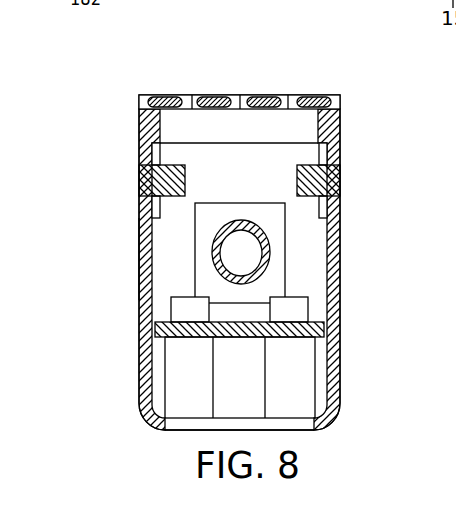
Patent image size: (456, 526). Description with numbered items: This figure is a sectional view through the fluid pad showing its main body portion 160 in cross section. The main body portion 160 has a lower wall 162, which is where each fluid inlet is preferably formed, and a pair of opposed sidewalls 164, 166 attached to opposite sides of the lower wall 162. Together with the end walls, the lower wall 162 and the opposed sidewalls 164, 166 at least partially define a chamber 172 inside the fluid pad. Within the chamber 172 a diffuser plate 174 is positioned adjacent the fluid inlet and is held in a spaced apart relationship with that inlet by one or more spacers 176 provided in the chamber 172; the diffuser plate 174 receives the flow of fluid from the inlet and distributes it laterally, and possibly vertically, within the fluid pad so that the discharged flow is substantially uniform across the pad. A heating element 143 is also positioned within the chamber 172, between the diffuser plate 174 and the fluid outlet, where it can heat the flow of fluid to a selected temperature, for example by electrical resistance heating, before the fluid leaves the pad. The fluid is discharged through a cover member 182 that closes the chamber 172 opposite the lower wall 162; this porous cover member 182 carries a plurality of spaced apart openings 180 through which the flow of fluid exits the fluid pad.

The heating element 143 is at (218, 279).
The main body portion 160 is at (340, 248).
The lower wall 162 is at (347, 428).
The sidewall 164 is at (340, 207).
The sidewall 166 is at (140, 232).
The chamber 172 is at (258, 191).
The diffuser plate 174 is at (325, 332).
The spacer 176 is at (178, 383).
The opening 180 is at (240, 95).
The cover member 182 is at (338, 95).